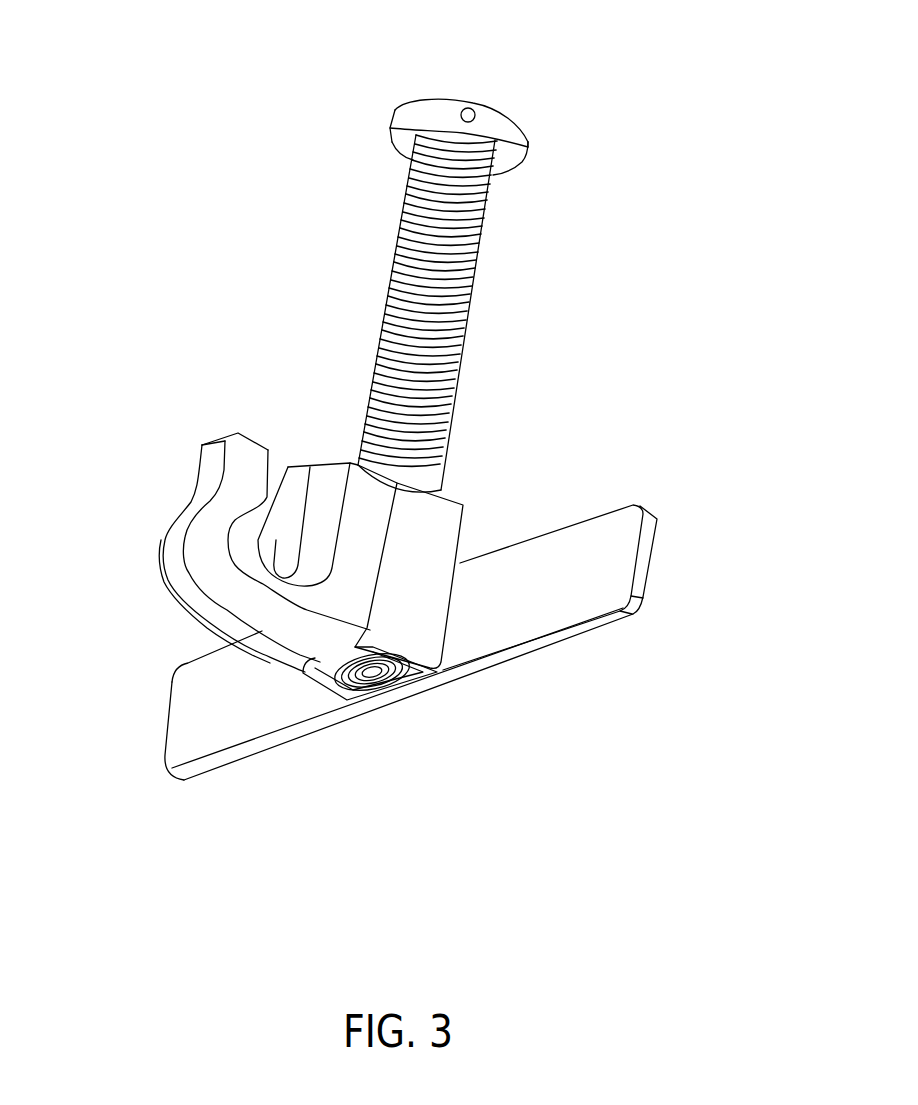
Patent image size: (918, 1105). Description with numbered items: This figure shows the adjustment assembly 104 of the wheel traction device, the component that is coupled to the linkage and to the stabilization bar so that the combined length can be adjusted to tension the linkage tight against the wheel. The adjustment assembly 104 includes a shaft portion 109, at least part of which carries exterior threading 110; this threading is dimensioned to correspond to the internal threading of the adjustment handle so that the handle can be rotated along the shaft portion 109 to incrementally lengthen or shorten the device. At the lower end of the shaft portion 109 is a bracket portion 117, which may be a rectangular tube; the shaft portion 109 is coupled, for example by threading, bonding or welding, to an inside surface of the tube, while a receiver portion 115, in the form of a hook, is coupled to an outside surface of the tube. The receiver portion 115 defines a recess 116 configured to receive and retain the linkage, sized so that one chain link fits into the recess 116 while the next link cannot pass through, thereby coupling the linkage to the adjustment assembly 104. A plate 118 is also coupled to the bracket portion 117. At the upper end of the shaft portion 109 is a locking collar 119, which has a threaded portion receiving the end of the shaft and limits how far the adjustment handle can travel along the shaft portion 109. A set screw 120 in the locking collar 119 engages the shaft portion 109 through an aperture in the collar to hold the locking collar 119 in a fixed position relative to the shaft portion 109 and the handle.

The adjustment assembly 104 is at (215, 203).
The shaft portion 109 is at (465, 325).
The exterior threading 110 is at (400, 187).
The receiver portion 115 is at (200, 550).
The recess 116 is at (282, 450).
The bracket portion 117 is at (433, 538).
The plate 118 is at (227, 720).
The locking collar 119 is at (515, 130).
The set screw 120 is at (468, 108).